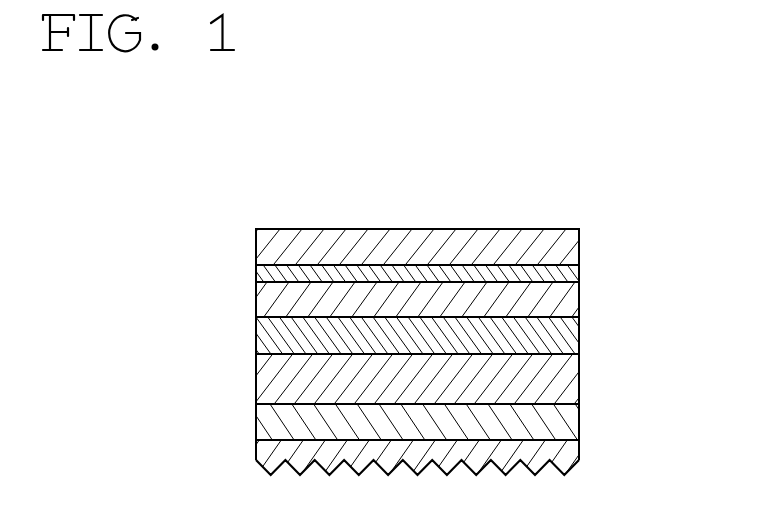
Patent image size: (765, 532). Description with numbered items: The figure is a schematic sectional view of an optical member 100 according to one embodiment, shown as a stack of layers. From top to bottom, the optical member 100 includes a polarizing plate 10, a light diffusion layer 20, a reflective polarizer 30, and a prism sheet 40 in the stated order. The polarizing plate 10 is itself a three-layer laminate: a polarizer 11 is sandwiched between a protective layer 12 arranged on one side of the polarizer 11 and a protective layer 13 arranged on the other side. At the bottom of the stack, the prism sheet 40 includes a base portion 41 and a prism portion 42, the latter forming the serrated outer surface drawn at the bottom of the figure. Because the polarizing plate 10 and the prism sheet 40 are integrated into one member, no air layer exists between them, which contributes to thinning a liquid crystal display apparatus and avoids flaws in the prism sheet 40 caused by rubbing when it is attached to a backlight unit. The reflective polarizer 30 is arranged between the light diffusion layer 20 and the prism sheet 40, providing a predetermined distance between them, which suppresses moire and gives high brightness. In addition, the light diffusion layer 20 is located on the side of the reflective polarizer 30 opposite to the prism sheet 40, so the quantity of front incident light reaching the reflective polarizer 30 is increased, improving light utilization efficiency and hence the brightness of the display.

The optical member 100 is at (608, 183).
The polarizing plate 10 is at (662, 230).
The protective layer 12 is at (579, 247).
The polarizer 11 is at (579, 273).
The protective layer 13 is at (579, 297).
The light diffusion layer 20 is at (579, 335).
The reflective polarizer 30 is at (579, 382).
The prism sheet 40 is at (657, 403).
The base portion 41 is at (579, 419).
The prism portion 42 is at (579, 455).